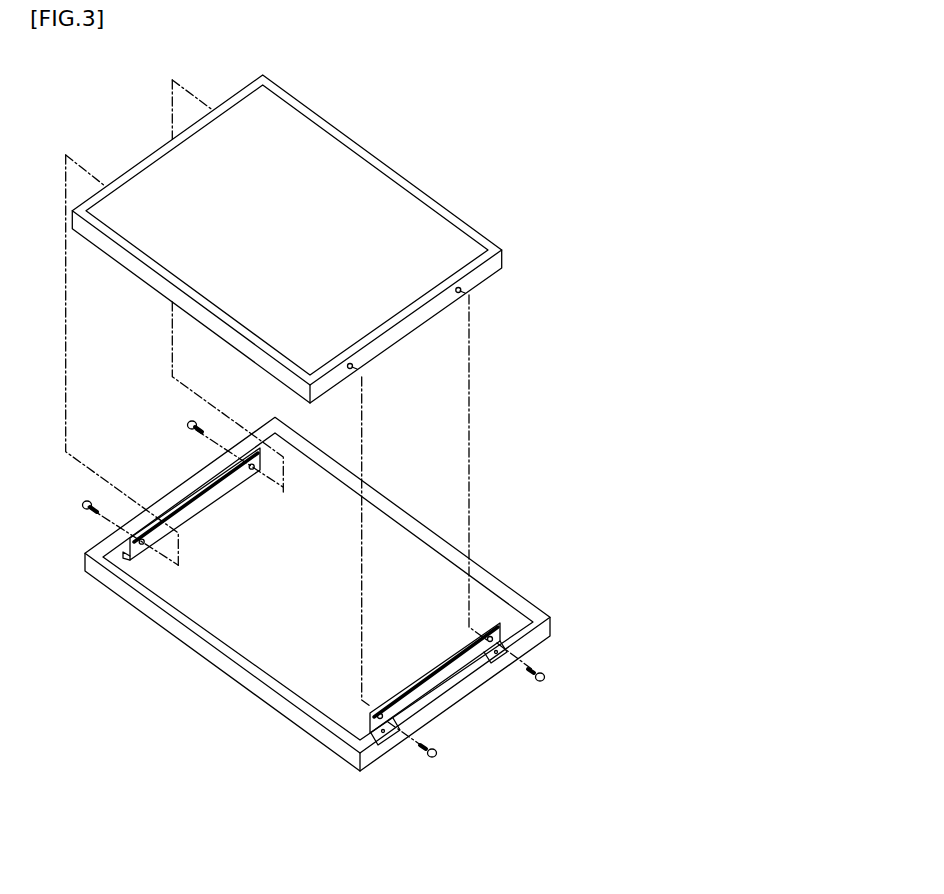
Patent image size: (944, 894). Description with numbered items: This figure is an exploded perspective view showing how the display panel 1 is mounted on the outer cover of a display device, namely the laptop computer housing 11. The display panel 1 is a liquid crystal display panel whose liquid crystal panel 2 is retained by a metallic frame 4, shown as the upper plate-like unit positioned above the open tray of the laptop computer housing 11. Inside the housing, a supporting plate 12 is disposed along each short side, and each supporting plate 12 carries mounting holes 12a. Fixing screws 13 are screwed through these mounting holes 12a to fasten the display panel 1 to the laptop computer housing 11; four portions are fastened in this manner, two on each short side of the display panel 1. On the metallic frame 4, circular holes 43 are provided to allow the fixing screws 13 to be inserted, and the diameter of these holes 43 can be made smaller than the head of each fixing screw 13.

The display panel 1 is at (316, 239).
The liquid crystal panel 2 is at (347, 160).
The metallic frame 4 is at (498, 262).
The circular holes 43 is at (462, 291).
The laptop computer housing 11 is at (523, 600).
The supporting plate 12 is at (187, 515).
The mounting holes 12a is at (141, 548).
The fixing screws 13 is at (187, 425).